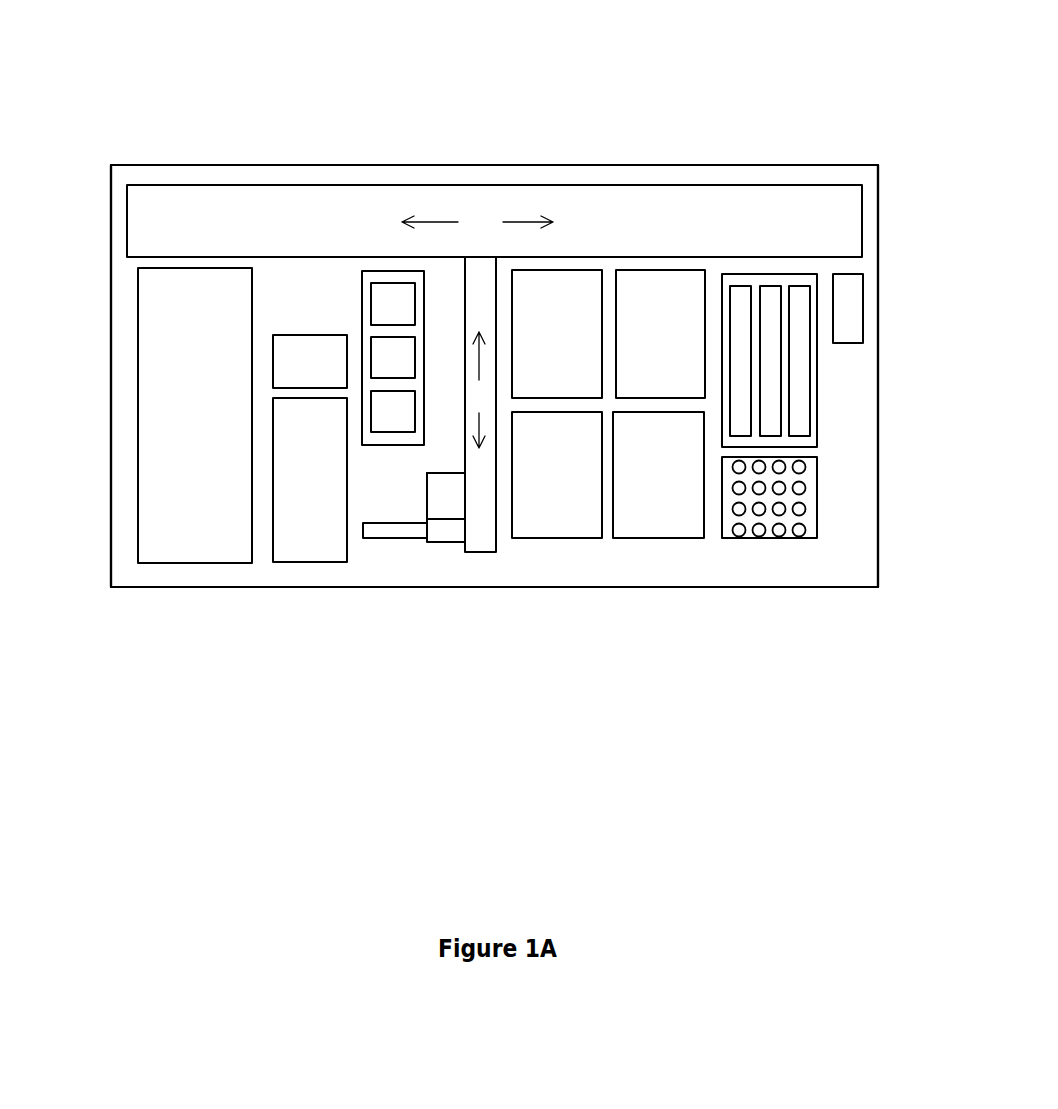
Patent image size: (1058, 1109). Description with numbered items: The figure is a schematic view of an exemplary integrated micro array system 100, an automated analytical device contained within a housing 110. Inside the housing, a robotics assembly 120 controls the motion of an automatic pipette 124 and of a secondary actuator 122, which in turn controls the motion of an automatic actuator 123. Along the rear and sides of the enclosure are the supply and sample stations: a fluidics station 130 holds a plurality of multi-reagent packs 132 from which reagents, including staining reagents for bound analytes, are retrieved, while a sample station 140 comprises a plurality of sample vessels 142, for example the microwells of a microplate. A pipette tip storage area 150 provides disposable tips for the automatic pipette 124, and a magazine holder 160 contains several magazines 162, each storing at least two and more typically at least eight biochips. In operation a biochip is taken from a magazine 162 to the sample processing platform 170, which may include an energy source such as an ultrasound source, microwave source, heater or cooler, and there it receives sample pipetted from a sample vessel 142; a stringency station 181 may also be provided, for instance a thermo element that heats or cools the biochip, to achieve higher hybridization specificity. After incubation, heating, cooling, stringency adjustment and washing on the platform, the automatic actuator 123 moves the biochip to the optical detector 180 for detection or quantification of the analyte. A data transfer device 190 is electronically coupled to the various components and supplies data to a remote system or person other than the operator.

The integrated micro array system 100 is at (483, 83).
The housing 110 is at (705, 165).
The robotics assembly 120 is at (293, 207).
The secondary actuator 122 is at (447, 542).
The automatic actuator 123 is at (407, 540).
The automatic pipette 124 is at (428, 498).
The fluidics station 130 is at (817, 354).
The multi-reagent packs 132 is at (800, 380).
The sample station 140 is at (817, 509).
The sample vessels 142 is at (740, 532).
The pipette tip storage area 150 is at (653, 537).
The magazine holder 160 is at (397, 272).
The magazines 162 is at (380, 282).
The sample processing platform 170 is at (282, 562).
The optical detector 180 is at (137, 415).
The stringency station 181 is at (285, 362).
The data transfer device 190 is at (863, 290).